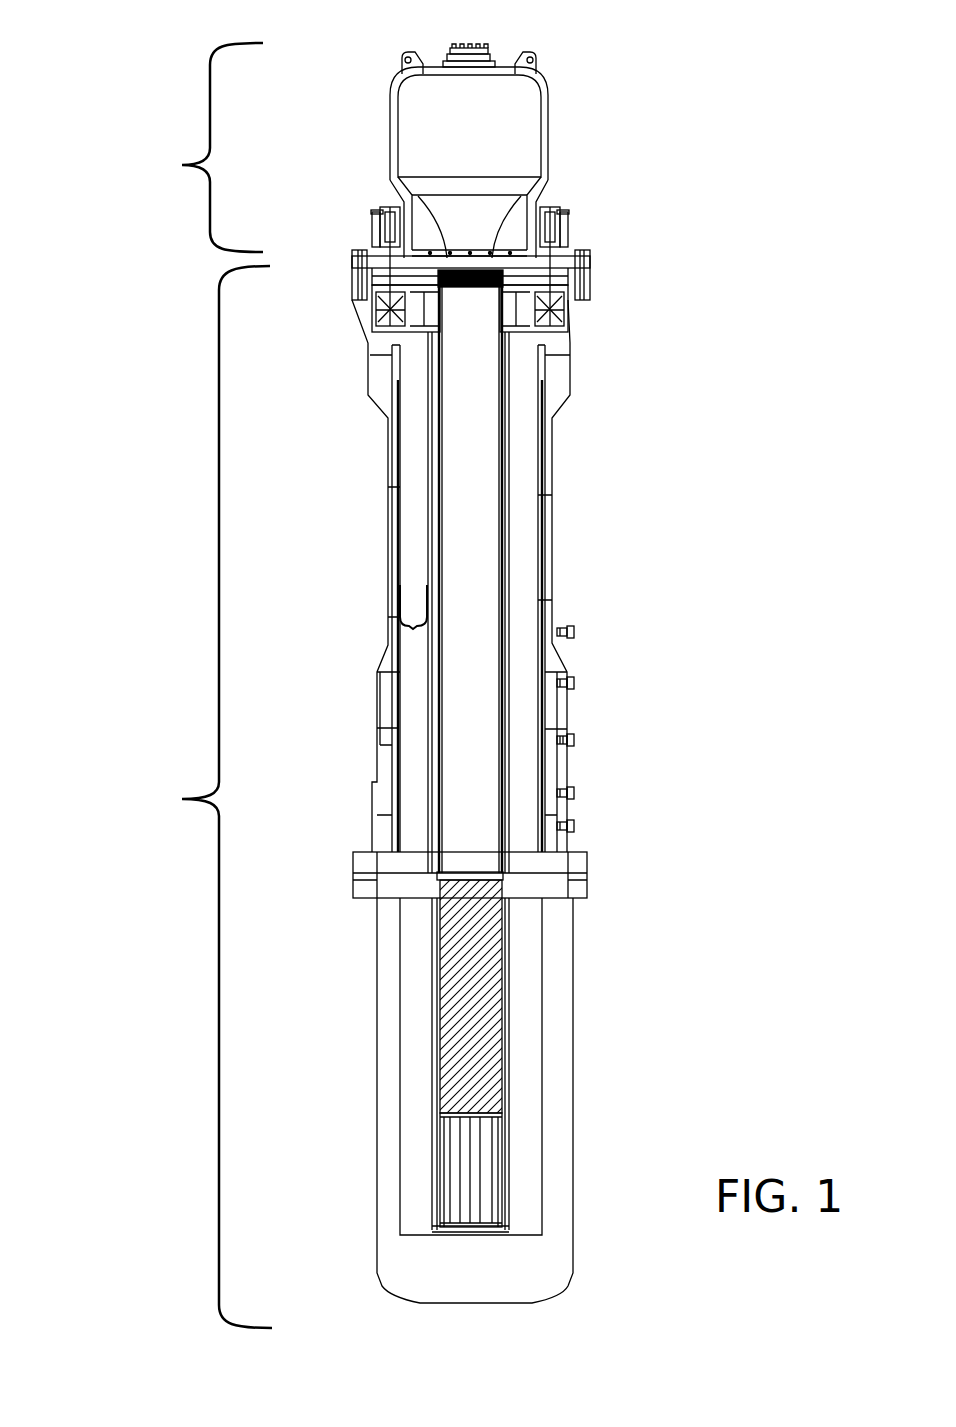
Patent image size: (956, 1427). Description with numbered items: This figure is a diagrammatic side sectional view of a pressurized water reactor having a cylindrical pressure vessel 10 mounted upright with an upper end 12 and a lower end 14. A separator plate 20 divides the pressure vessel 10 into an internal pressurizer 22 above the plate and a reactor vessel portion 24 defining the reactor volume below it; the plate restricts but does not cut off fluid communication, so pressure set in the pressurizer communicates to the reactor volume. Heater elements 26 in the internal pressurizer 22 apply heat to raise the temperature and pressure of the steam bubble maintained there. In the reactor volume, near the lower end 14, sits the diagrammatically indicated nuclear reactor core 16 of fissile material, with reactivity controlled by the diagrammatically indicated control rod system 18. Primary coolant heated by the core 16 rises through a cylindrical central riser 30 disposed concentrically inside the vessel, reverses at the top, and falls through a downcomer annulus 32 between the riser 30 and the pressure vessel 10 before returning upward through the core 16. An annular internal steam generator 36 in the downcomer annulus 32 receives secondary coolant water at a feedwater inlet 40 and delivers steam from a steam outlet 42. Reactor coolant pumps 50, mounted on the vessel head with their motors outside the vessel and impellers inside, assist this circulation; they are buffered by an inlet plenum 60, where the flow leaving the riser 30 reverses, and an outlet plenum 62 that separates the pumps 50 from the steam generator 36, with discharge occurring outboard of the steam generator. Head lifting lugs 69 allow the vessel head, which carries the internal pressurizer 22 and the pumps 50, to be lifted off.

The cylindrical pressure vessel 10 is at (189, 721).
The upper end 12 is at (562, 96).
The lower end 14 is at (302, 1229).
The nuclear reactor core 16 is at (470, 1158).
The control rod system 18 is at (490, 1020).
The separator plate 20 is at (470, 252).
The internal pressurizer 22 is at (203, 147).
The reactor vessel portion 24 is at (208, 797).
The heater elements 26 is at (449, 252).
The cylindrical central riser 30 is at (440, 567).
The downcomer annulus 32 is at (417, 630).
The annular internal steam generator 36 is at (415, 490).
The feedwater inlet 40 is at (575, 793).
The steam outlet 42 is at (574, 740).
The reactor coolant pumps 50 is at (373, 204).
The inlet plenum 60 is at (417, 277).
The outlet plenum 62 is at (415, 322).
The head lifting lugs 69 is at (404, 55).